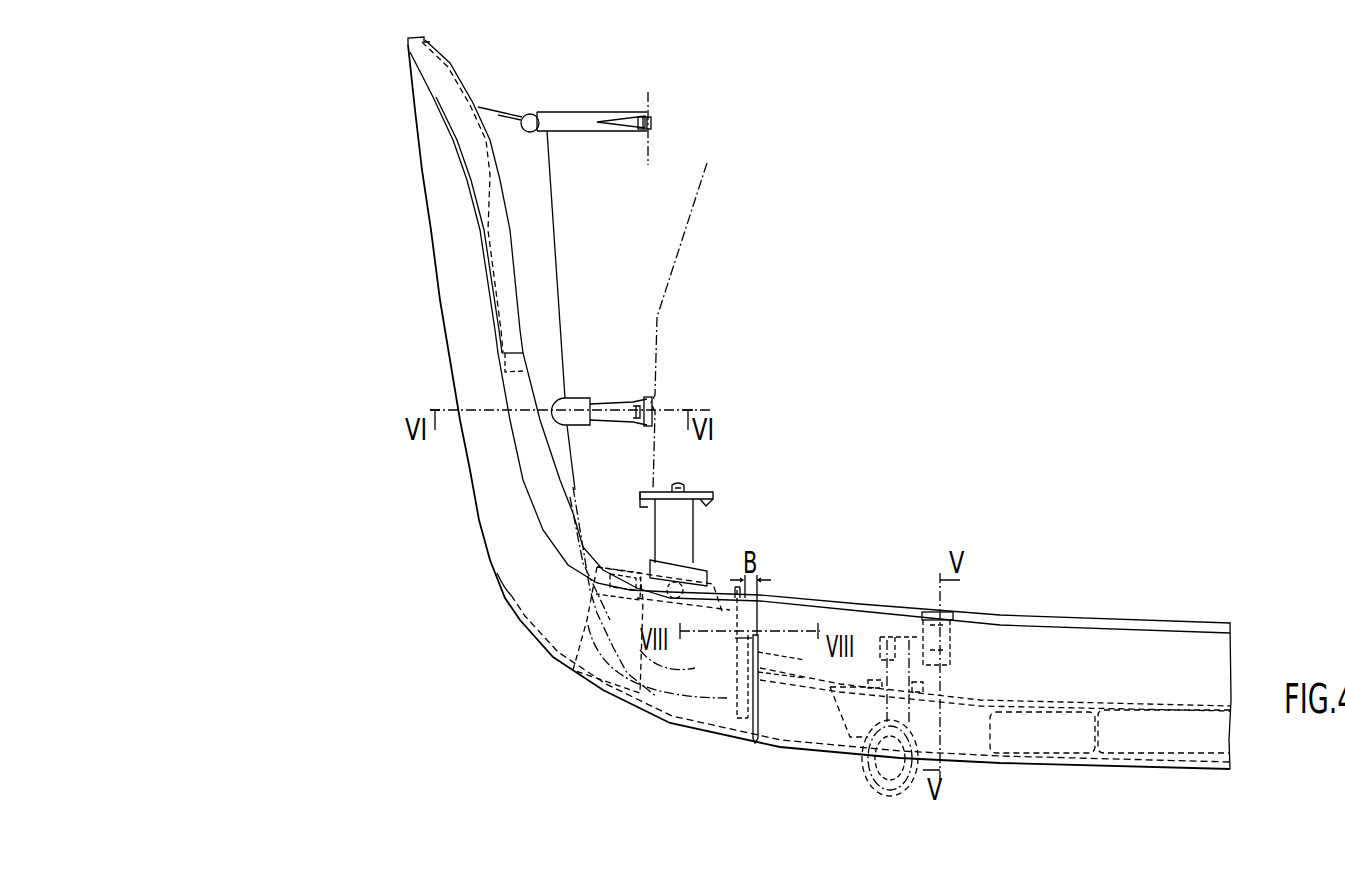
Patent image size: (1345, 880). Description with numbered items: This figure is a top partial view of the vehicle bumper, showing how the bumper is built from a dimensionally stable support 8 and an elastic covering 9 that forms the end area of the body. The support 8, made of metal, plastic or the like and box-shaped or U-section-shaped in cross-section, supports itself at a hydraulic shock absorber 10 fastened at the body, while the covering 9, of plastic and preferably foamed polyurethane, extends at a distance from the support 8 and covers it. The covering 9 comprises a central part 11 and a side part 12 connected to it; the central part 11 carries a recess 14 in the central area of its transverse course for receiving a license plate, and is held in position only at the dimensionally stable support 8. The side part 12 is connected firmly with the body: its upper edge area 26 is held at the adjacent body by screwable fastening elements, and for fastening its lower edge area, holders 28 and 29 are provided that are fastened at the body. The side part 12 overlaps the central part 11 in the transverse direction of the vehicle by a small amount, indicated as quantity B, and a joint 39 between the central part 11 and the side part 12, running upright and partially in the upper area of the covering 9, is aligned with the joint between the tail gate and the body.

The side part 12 is at (444, 313).
The upper edge area 26 is at (507, 307).
The holder 29 is at (590, 133).
The holder 28 is at (617, 420).
The hydraulic shock absorber 10 is at (693, 527).
The dimensionally stable support 8 is at (582, 613).
The joint 39 is at (753, 740).
The central part 11 is at (833, 748).
The elastic covering 9 is at (700, 731).
The recess 14 is at (1110, 731).